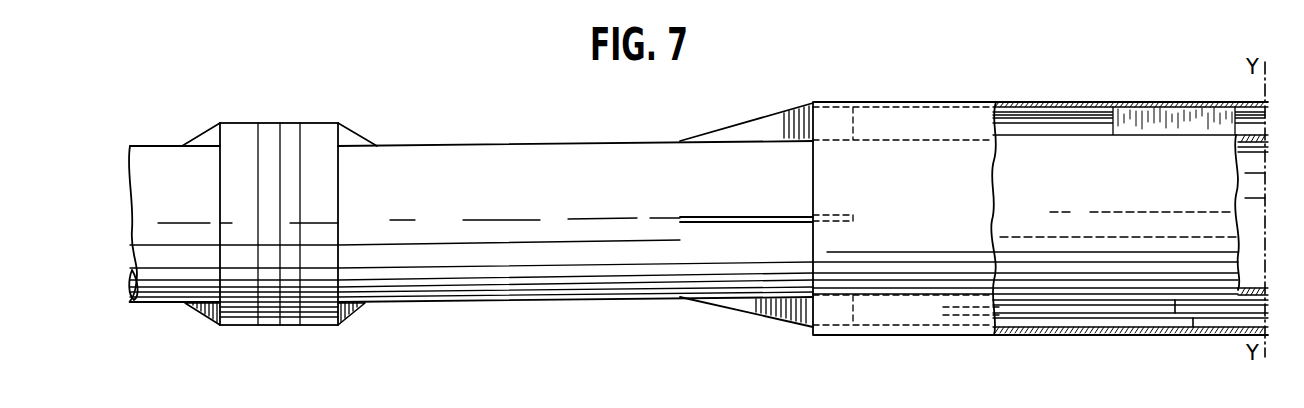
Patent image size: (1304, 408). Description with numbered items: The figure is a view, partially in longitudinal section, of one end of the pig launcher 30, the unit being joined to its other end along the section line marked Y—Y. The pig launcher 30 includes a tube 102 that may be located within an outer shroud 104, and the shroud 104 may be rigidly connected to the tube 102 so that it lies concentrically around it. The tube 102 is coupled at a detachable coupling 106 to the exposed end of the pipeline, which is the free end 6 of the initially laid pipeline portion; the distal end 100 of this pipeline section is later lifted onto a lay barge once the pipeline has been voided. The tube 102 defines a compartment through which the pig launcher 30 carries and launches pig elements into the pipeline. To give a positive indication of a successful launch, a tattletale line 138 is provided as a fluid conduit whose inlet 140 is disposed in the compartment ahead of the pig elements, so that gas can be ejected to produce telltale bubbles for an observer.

The free end 6 is at (141, 146).
The pig launcher 30 is at (453, 124).
The distal end 100 is at (209, 110).
The tube 102 is at (576, 162).
The outer shroud 104 is at (1108, 336).
The detachable coupling 106 is at (302, 116).
The tattletale line 138 is at (1193, 334).
The inlet 140 is at (952, 312).